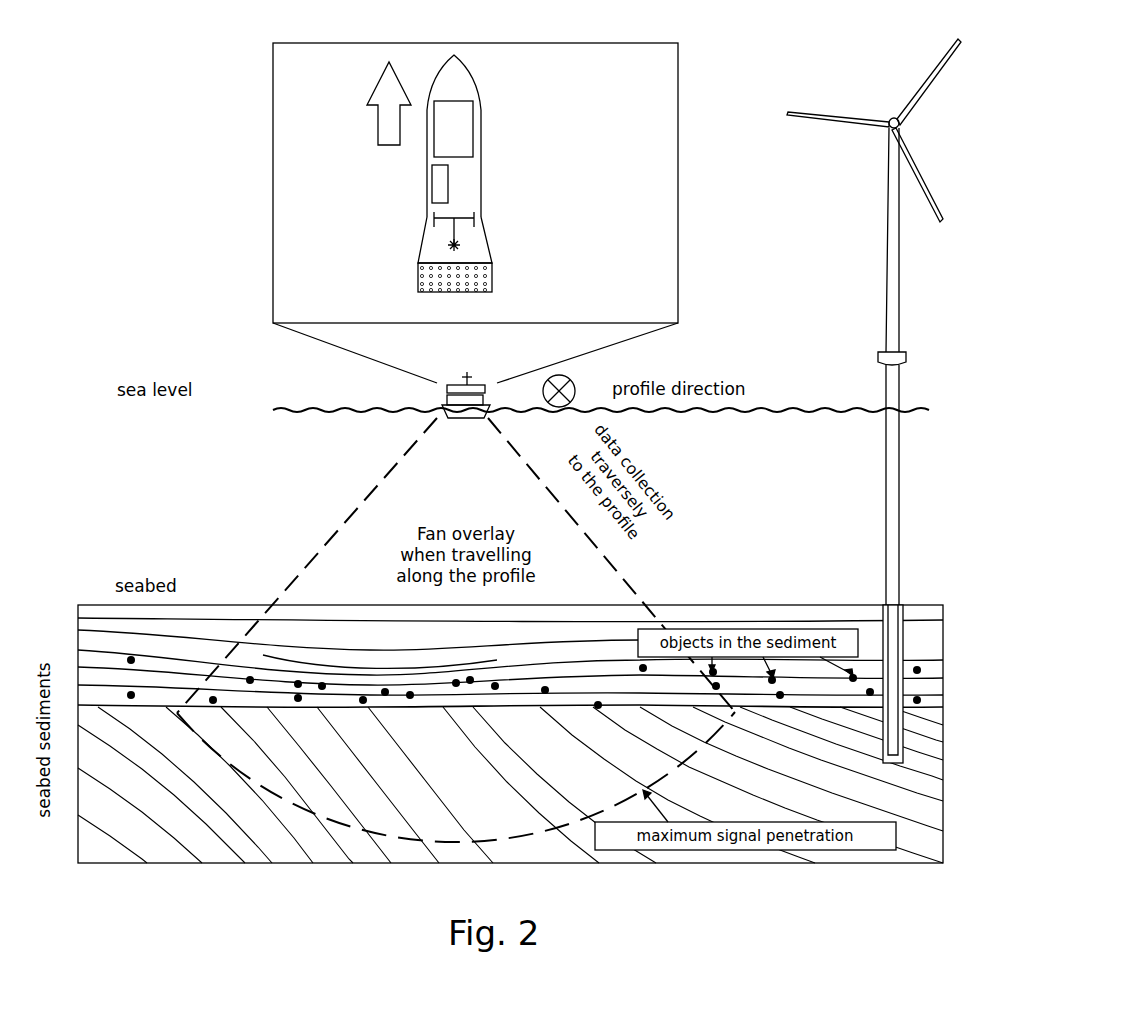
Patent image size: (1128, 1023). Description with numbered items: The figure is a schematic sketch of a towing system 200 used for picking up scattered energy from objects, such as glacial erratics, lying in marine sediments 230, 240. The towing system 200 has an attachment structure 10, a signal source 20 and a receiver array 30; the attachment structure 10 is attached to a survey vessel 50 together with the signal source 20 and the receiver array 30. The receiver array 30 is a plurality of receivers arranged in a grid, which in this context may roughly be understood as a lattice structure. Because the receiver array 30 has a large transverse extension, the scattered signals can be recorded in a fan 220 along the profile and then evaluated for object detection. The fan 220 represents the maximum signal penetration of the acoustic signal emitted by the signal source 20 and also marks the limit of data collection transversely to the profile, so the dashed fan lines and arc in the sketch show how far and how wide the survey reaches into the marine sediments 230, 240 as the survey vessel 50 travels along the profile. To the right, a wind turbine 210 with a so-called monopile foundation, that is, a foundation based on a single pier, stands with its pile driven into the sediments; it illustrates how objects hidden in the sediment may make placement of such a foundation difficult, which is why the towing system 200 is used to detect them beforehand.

The attachment structure 10 is at (488, 248).
The signal source 20 is at (450, 245).
The receiver array 30 is at (493, 275).
The survey vessel 50 is at (482, 135).
The towing system 200 is at (514, 213).
The wind turbine 210 is at (888, 130).
The fan 220 is at (627, 584).
The marine sediments 230 is at (250, 615).
The marine sediments 240 is at (185, 852).